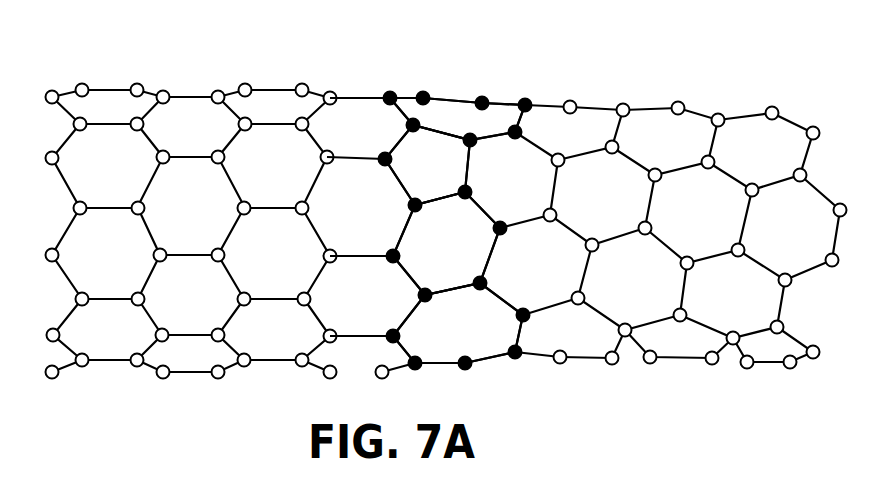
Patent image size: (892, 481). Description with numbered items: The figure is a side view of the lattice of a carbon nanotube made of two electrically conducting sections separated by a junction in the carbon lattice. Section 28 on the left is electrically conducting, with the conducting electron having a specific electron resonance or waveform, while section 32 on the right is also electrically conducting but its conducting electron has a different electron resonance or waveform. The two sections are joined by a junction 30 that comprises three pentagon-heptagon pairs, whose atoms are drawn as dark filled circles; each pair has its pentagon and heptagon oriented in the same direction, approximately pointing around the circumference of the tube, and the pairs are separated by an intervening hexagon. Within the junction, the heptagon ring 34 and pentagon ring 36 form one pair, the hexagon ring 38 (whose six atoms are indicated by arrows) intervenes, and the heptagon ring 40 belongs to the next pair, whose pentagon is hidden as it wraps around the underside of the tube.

The section 28 is at (337, 55).
The junction 30 is at (540, 57).
The section 32 is at (857, 57).
The heptagon ring 34 is at (452, 123).
The pentagon ring 36 is at (441, 178).
The hexagon ring 38 is at (463, 209).
The heptagon ring 40 is at (467, 344).